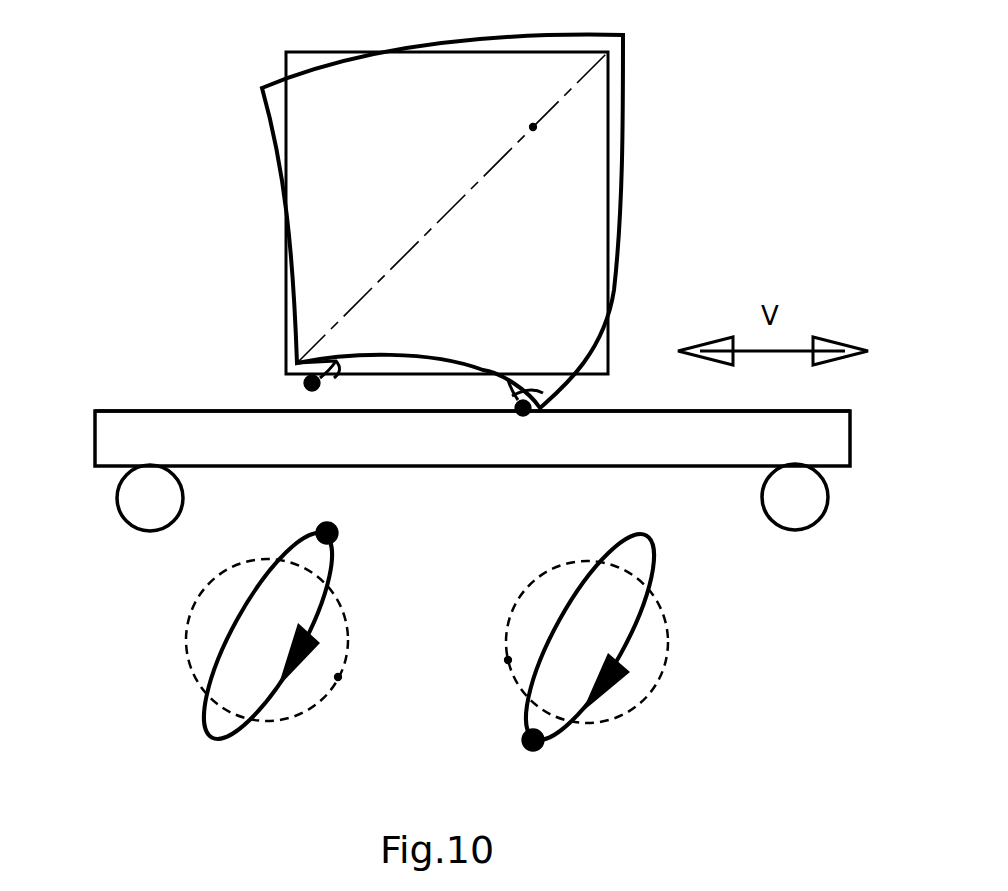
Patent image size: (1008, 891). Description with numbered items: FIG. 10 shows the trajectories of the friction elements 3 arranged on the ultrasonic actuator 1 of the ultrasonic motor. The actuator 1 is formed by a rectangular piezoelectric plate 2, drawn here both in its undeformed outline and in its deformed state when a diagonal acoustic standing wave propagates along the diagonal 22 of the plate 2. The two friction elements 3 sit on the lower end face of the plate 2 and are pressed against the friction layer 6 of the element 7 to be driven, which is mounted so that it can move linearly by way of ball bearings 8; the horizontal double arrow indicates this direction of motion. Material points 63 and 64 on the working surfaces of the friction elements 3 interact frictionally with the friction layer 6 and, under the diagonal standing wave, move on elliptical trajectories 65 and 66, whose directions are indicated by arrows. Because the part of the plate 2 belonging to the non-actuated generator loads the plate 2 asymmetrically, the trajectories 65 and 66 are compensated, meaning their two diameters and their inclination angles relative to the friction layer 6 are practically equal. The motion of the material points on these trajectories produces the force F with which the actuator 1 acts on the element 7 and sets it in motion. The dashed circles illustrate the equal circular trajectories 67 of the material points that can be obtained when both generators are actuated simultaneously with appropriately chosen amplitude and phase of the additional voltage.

The ultrasonic actuator 1 is at (244, 132).
The piezoelectric plate 2 is at (287, 220).
The diagonal 22 is at (536, 128).
The friction elements 3 is at (339, 378).
The friction layer 6 is at (208, 409).
The element to be driven 7 is at (145, 442).
The ball bearings 8 is at (130, 528).
The material point 63 is at (327, 521).
The material point 64 is at (540, 726).
The elliptical trajectory 65 is at (192, 720).
The elliptical trajectory 66 is at (571, 739).
The circular trajectories 67 is at (338, 677).